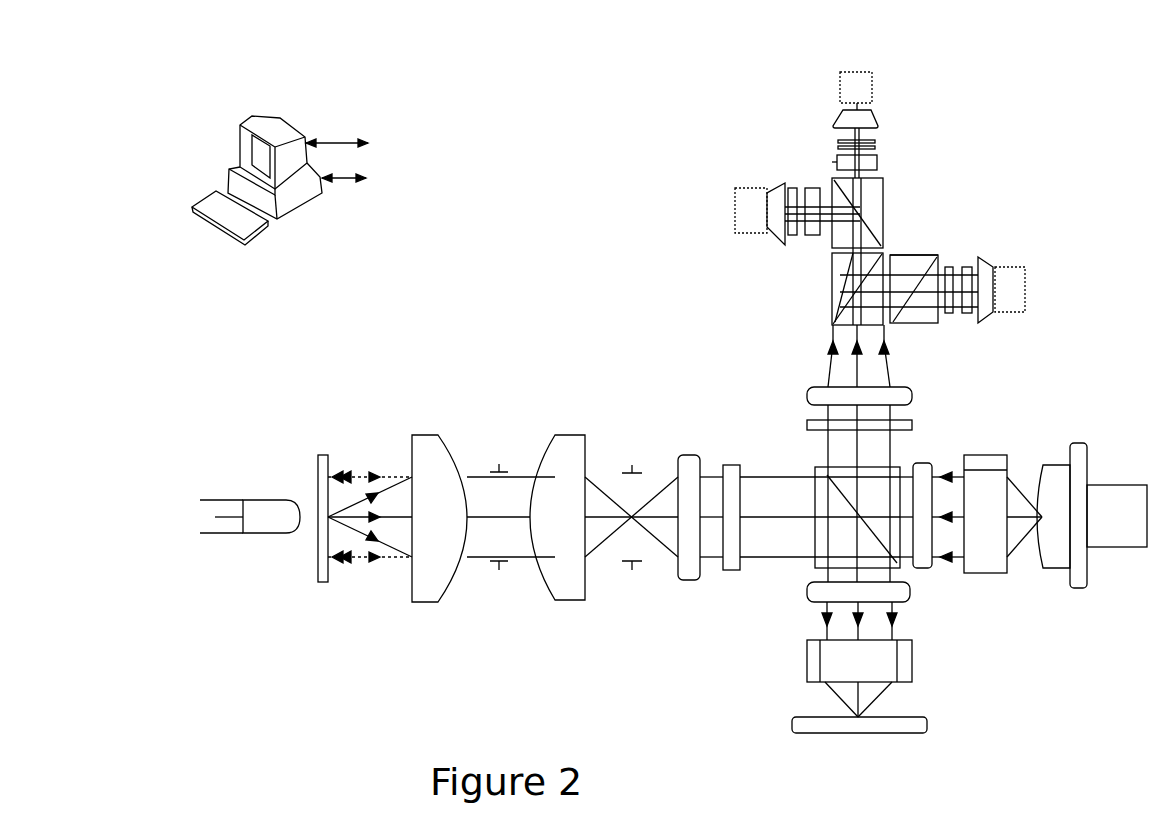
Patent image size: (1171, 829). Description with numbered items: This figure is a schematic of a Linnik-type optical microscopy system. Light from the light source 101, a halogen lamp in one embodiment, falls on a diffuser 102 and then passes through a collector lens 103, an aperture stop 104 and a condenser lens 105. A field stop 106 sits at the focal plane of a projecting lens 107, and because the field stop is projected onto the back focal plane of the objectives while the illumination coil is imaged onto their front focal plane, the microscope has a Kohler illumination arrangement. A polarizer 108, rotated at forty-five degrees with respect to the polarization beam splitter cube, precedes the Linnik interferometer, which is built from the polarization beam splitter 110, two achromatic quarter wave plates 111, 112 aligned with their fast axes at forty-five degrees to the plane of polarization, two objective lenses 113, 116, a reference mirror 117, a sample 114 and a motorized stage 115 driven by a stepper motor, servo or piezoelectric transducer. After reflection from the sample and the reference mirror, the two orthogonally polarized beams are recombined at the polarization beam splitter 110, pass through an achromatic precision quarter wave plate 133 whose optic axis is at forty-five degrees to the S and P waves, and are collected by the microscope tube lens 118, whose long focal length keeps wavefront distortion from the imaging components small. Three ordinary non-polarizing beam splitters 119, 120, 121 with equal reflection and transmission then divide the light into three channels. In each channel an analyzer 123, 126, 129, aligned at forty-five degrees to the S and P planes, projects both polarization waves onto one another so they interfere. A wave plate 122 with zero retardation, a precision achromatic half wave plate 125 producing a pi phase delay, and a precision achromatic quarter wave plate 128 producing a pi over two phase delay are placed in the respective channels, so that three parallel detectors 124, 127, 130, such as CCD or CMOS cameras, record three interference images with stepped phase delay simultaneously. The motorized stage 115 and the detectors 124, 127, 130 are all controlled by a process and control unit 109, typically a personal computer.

The light source 101 is at (250, 494).
The diffuser 102 is at (361, 506).
The collector lens 103 is at (439, 506).
The aperture stop 104 is at (500, 503).
The condenser lens 105 is at (557, 506).
The field stop 106 is at (635, 503).
The projecting lens 107 is at (688, 508).
The polarizer 108 is at (732, 508).
The process and control unit 109 is at (337, 156).
The polarization beam splitter 110 is at (841, 508).
The achromatic quarter wave plate 111 is at (831, 593).
The achromatic quarter wave plate 112 is at (920, 506).
The objective lens 113 is at (985, 529).
The sample 114 is at (1051, 531).
The motorized stage 115 is at (1108, 515).
The objective lens 116 is at (832, 678).
The reference mirror 117 is at (879, 725).
The microscope tube lens 118 is at (877, 397).
The non-polarizing beam splitter 119 is at (839, 291).
The non-polarizing beam splitter 120 is at (917, 300).
The non-polarizing beam splitter 121 is at (875, 212).
The wave plate 122 is at (874, 164).
The analyzer 123 is at (874, 144).
The parallel detector 124 is at (872, 100).
The precision achromatic half wave plate 125 is at (929, 244).
The analyzer 126 is at (966, 307).
The parallel detector 127 is at (1001, 282).
The precision achromatic quarter wave plate 128 is at (814, 166).
The analyzer 129 is at (793, 224).
The parallel detector 130 is at (751, 201).
The wave plate 133 is at (879, 426).